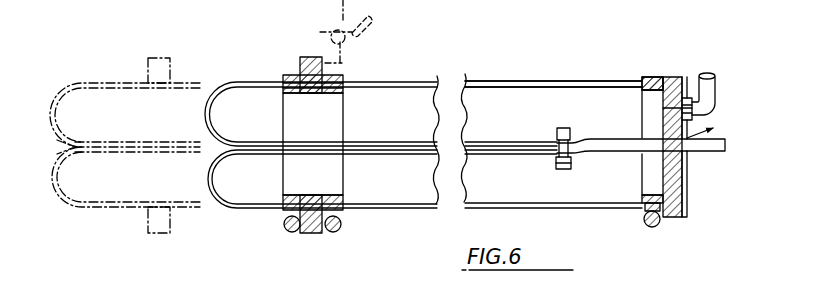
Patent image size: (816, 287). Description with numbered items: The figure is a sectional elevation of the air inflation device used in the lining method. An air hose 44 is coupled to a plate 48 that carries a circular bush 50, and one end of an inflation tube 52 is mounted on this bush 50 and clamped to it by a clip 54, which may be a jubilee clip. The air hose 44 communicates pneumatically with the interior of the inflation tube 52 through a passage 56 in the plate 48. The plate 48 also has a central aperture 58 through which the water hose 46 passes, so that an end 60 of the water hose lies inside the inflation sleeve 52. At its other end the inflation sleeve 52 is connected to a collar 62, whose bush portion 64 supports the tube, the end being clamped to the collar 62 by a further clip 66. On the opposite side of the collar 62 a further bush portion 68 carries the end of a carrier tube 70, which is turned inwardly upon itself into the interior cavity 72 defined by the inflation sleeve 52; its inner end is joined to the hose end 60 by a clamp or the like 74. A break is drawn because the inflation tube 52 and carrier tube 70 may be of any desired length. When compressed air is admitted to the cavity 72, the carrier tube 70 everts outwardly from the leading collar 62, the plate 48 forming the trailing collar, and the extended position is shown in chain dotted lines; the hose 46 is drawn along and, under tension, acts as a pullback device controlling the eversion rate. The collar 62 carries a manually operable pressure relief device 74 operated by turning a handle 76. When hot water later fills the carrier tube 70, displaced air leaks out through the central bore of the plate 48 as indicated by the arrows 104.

The air hose 44 is at (701, 75).
The water hose 46 is at (712, 123).
The plate 48 is at (683, 218).
The circular bush 50 is at (649, 100).
The inflation tube 52 is at (557, 83).
The clip 54 is at (648, 77).
The passage 56 is at (660, 133).
The central aperture 58 is at (686, 188).
The end of the water hose 60 is at (552, 162).
The collar 62 is at (298, 58).
The bush portion 64 is at (333, 94).
The clip 66 is at (345, 212).
The further bush portion 68 is at (283, 100).
The carrier tube 70 is at (245, 82).
The interior cavity 72 is at (421, 187).
The clamp 74 is at (332, 32).
The handle 76 is at (372, 32).
The arrows 104 is at (628, 183).